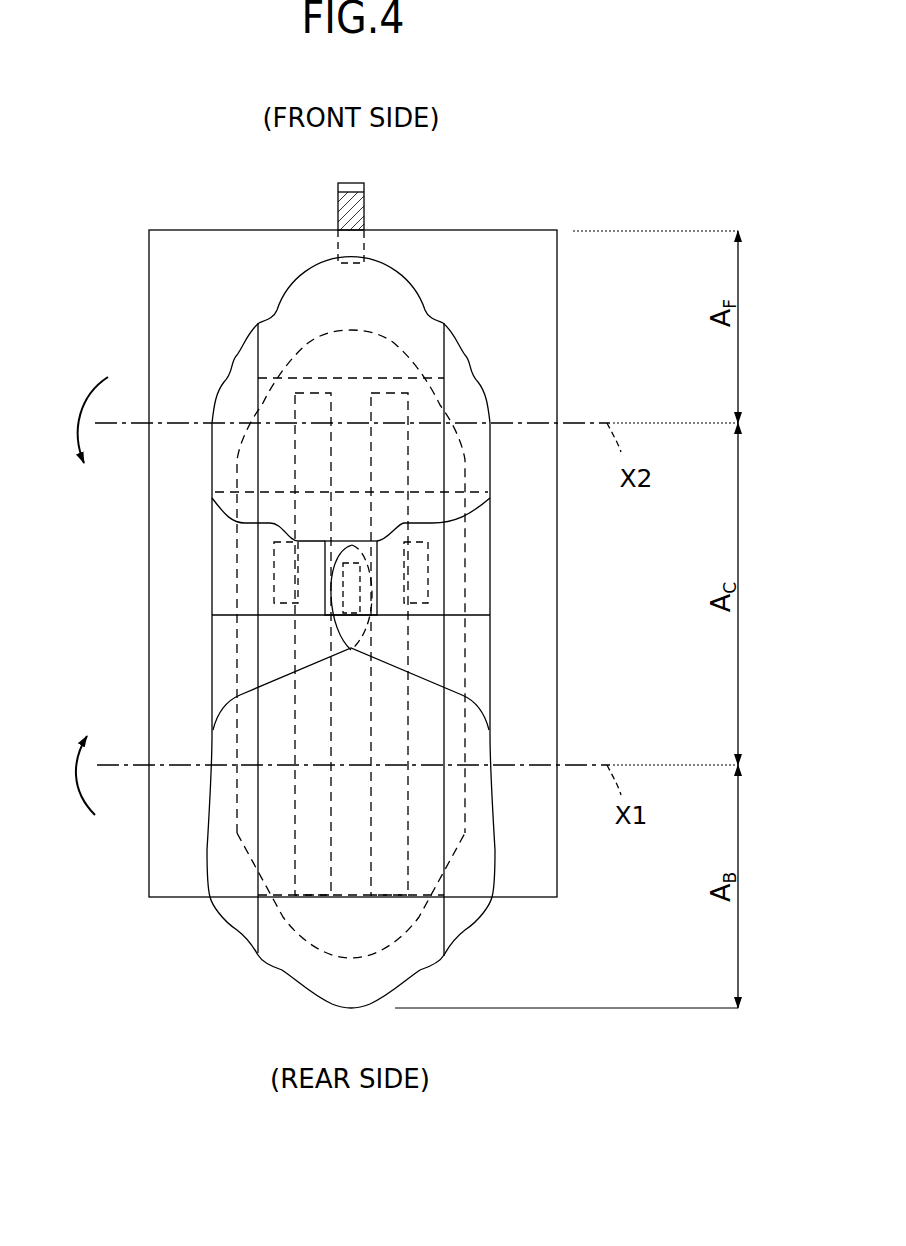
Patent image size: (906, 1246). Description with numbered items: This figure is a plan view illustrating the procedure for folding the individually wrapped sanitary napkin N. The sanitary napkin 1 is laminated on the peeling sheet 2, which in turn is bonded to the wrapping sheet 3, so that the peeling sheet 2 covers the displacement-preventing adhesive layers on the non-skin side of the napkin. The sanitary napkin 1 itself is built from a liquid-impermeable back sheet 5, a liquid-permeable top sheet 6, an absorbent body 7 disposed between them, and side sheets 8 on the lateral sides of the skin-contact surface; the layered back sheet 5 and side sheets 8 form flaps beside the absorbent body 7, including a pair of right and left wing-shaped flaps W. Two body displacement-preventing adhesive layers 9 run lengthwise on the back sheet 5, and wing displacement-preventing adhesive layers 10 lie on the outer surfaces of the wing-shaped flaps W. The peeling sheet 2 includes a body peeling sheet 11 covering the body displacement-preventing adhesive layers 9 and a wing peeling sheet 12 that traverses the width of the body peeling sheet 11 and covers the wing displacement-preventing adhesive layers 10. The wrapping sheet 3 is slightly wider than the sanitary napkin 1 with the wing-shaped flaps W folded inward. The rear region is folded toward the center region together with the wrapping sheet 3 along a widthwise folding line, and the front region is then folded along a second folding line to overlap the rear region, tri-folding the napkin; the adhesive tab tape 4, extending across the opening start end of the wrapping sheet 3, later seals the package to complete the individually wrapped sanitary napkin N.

The individually wrapped sanitary napkin N is at (602, 200).
The sanitary napkin 1 is at (470, 350).
The peeling sheet 2 is at (450, 405).
The wrapping sheet 3 is at (478, 226).
The adhesive tab tape 4 is at (336, 202).
The back sheet 5 is at (475, 675).
The top sheet 6 is at (288, 953).
The absorbent body 7 is at (393, 938).
The side sheets 8 is at (217, 825).
The body displacement-preventing adhesive layers 9 is at (307, 388).
The wing displacement-preventing adhesive layers 10 is at (276, 552).
The body peeling sheet 11 is at (262, 362).
The wing peeling sheet 12 is at (476, 608).
The wing-shaped flaps W is at (226, 529).